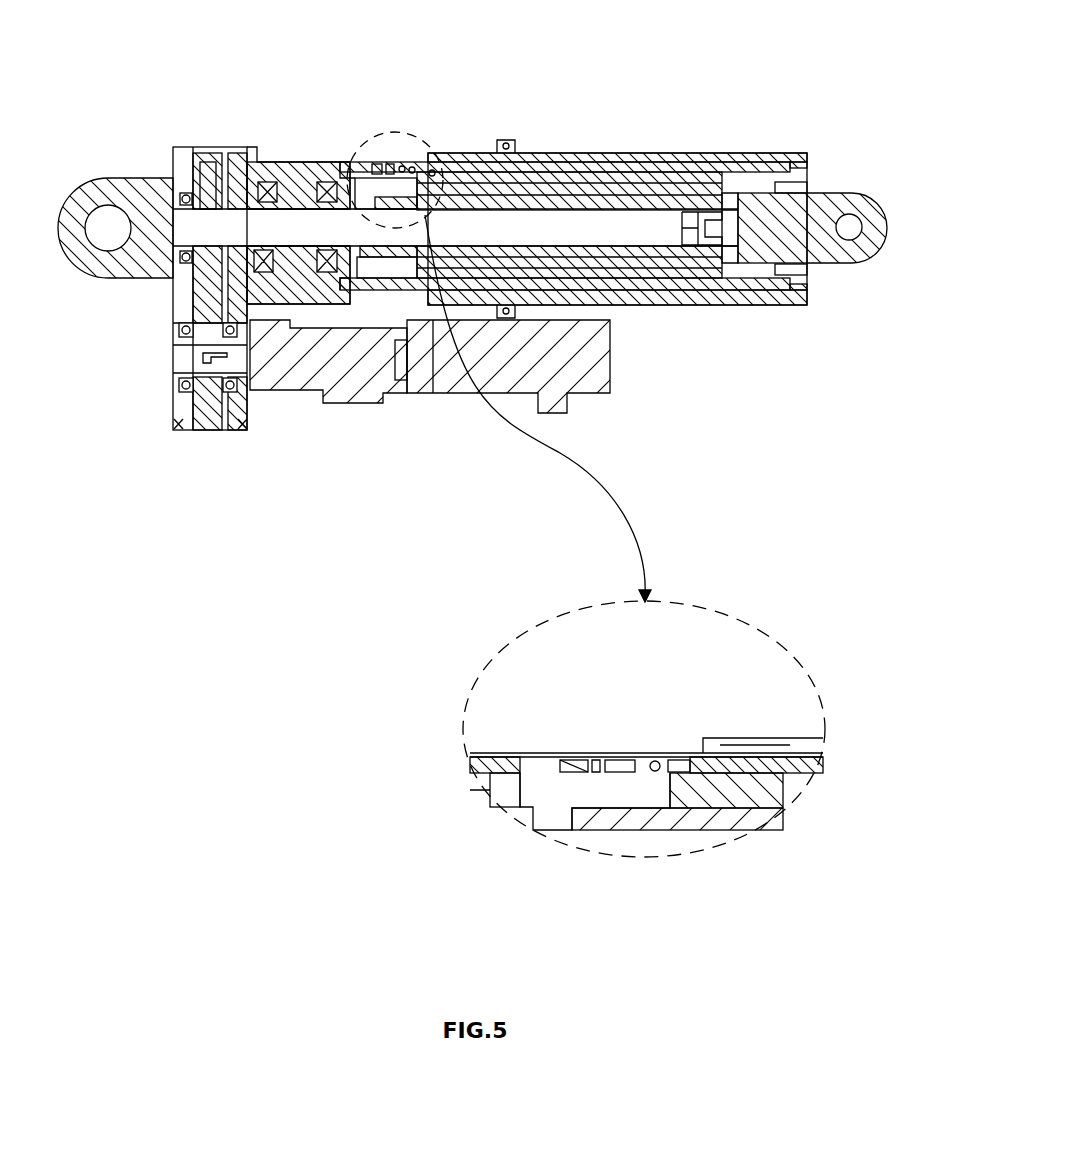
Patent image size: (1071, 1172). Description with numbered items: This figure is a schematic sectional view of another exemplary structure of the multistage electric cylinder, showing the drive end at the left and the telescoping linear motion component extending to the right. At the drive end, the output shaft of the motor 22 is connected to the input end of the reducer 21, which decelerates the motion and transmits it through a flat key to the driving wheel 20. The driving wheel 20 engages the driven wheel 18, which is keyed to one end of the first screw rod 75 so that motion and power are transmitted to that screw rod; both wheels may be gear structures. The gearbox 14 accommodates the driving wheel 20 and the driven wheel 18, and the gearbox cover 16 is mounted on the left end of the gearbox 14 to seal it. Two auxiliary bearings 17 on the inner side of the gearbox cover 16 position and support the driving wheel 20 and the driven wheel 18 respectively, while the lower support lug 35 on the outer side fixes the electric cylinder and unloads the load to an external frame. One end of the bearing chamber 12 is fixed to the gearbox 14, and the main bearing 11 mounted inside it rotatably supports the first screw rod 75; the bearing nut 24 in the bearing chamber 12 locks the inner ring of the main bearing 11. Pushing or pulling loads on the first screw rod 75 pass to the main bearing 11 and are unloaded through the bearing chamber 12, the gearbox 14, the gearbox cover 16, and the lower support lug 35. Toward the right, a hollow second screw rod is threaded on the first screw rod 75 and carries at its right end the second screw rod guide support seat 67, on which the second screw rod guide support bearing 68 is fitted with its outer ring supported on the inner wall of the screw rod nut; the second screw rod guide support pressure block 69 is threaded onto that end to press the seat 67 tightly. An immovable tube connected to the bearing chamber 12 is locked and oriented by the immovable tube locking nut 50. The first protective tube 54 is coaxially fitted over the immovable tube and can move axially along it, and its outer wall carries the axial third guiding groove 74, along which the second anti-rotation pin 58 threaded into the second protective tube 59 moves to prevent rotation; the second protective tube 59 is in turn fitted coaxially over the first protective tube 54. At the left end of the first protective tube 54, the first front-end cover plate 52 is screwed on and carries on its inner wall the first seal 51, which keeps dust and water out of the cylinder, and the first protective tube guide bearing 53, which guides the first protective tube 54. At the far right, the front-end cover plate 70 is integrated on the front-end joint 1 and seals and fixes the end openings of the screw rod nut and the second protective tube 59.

The front-end joint 1 is at (868, 210).
The main bearing 11 is at (253, 150).
The bearing chamber 12 is at (312, 178).
The gearbox 14 is at (245, 428).
The gearbox cover 16 is at (170, 433).
The auxiliary bearings 17 is at (182, 387).
The driven wheel 18 is at (185, 242).
The driving wheel 20 is at (212, 427).
The reducer 21 is at (363, 393).
The motor 22 is at (577, 367).
The bearing nut 24 is at (225, 185).
The lower support lug 35 is at (118, 183).
The immovable tube locking nut 50 is at (382, 167).
The first seal 51 is at (392, 168).
The first front-end cover plate 52 is at (400, 170).
The first protective tube guide bearing 53 is at (412, 170).
The first protective tube 54 is at (432, 172).
The second anti-rotation pin 58 is at (503, 140).
The second protective tube 59 is at (587, 150).
The second screw rod guide support seat 67 is at (710, 190).
The second screw rod guide support bearing 68 is at (706, 196).
The second screw rod guide support pressure block 69 is at (733, 217).
The front-end cover plate 70 is at (803, 170).
The third guiding groove 74 is at (476, 166).
The first screw rod 75 is at (293, 222).